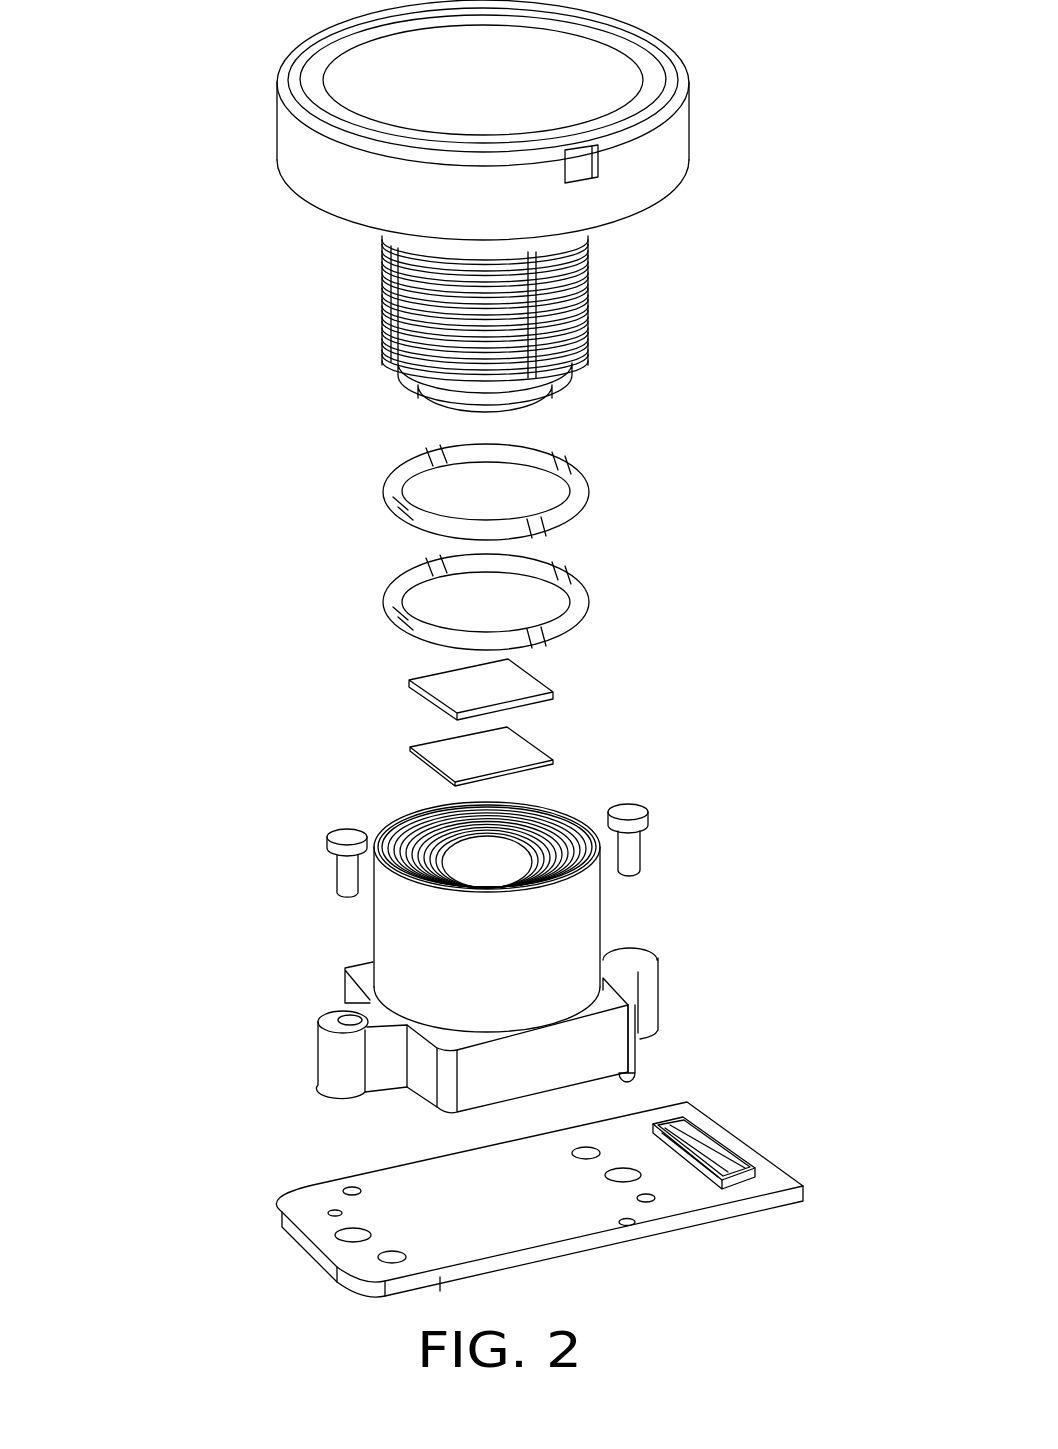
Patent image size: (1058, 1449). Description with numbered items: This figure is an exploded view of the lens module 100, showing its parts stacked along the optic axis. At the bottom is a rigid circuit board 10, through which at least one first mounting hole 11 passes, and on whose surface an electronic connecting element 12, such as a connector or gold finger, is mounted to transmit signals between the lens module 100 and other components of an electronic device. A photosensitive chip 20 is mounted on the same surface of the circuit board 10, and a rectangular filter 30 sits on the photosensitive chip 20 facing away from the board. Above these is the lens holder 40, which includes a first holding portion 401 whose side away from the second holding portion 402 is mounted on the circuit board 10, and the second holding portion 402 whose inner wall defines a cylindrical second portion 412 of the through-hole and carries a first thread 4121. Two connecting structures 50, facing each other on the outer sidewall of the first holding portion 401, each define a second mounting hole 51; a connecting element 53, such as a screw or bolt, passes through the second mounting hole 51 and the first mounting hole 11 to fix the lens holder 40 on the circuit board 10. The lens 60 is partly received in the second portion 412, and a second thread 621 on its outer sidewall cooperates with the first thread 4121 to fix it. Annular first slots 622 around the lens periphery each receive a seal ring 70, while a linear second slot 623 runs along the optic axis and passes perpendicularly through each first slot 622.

The lens module 100 is at (220, 45).
The circuit board 10 is at (583, 1228).
The first mounting hole 11 is at (350, 1237).
The electronic connecting element 12 is at (713, 1153).
The photosensitive chip 20 is at (535, 760).
The filter 30 is at (528, 690).
The lens holder 40 is at (785, 880).
The first holding portion 401 is at (592, 1045).
The second holding portion 402 is at (572, 945).
The second portion 412 is at (486, 850).
The first thread 4121 is at (514, 846).
The connecting structure 50 is at (333, 1058).
The second mounting hole 51 is at (352, 1018).
The connecting element 53 is at (627, 852).
The lens 60 is at (640, 190).
The second thread 621 is at (485, 363).
The first slot 622 is at (389, 256).
The second slot 623 is at (535, 372).
The seal ring 70 is at (566, 510).